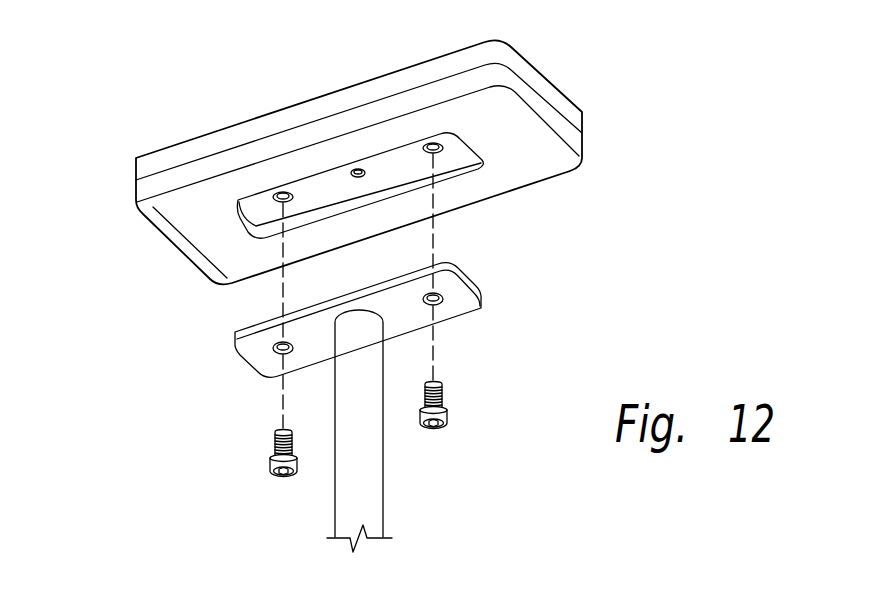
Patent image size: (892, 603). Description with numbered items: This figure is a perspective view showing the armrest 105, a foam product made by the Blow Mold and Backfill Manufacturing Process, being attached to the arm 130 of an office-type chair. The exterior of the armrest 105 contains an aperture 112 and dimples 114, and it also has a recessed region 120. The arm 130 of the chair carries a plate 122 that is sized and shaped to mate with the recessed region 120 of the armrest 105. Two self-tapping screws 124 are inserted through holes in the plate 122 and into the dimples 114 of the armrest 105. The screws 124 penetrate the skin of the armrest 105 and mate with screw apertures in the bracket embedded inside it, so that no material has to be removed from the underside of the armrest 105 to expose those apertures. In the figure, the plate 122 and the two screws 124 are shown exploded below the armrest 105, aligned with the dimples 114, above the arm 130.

The armrest 105 is at (140, 118).
The aperture 112 is at (353, 168).
The dimples 114 is at (280, 195).
The recessed region 120 is at (332, 191).
The plate 122 is at (468, 278).
The self-tapping screws 124 is at (273, 437).
The arm 130 is at (383, 500).